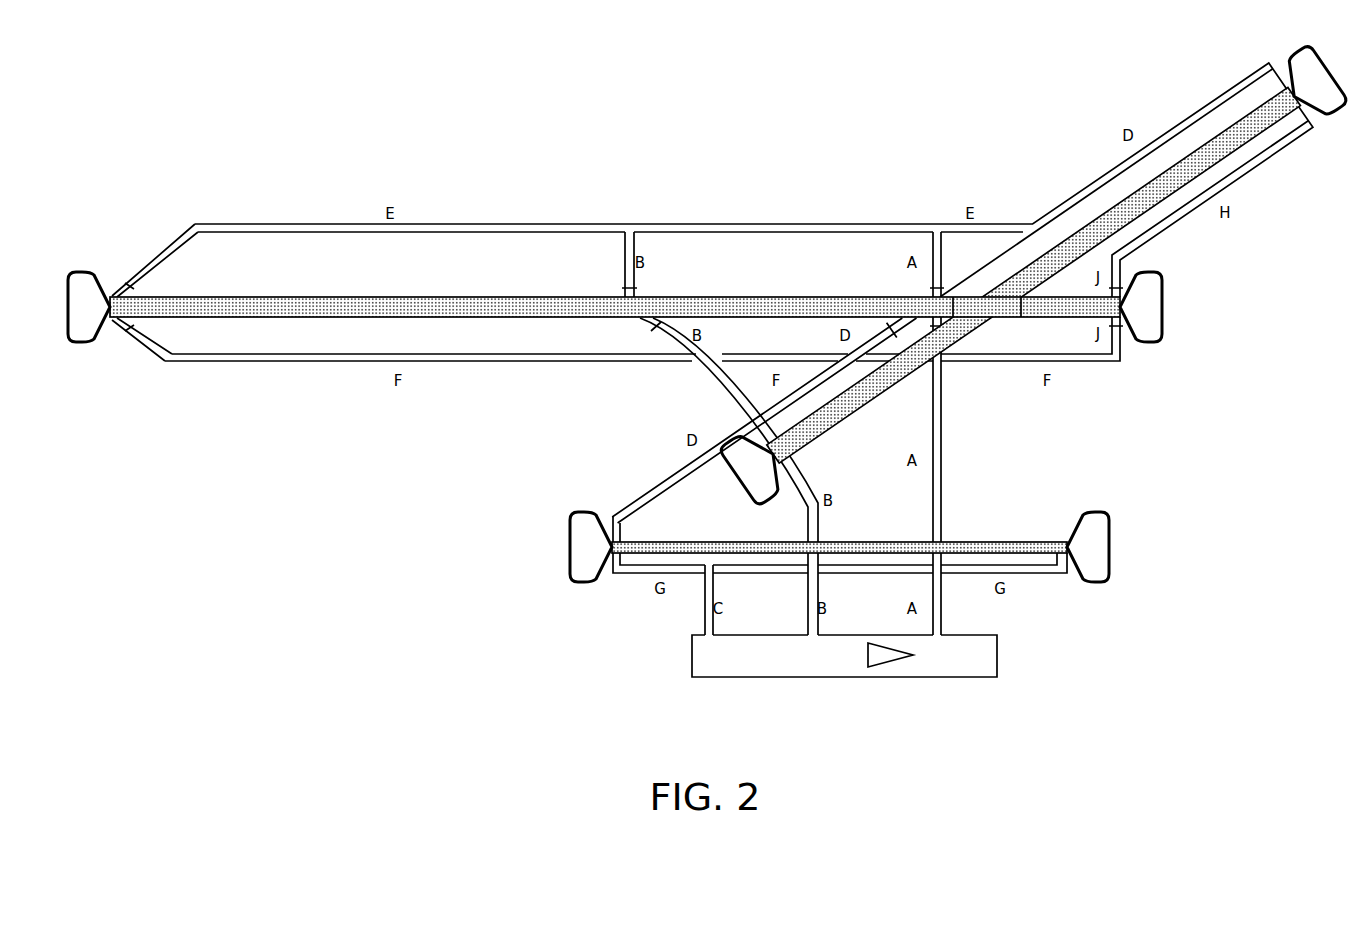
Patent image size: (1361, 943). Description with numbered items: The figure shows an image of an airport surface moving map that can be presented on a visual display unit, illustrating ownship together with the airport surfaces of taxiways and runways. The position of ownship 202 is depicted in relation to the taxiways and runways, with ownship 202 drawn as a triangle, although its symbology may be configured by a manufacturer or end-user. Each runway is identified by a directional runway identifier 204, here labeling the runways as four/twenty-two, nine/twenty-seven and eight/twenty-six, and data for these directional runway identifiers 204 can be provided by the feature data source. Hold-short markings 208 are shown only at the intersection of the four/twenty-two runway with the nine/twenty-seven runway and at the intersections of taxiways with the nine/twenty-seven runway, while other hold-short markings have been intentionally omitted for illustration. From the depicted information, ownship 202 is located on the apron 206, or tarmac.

The ownship 202 is at (925, 652).
The directional runway identifier 204 is at (1153, 346).
The apron 206 is at (690, 658).
The hold-short markings 208 is at (1012, 288).